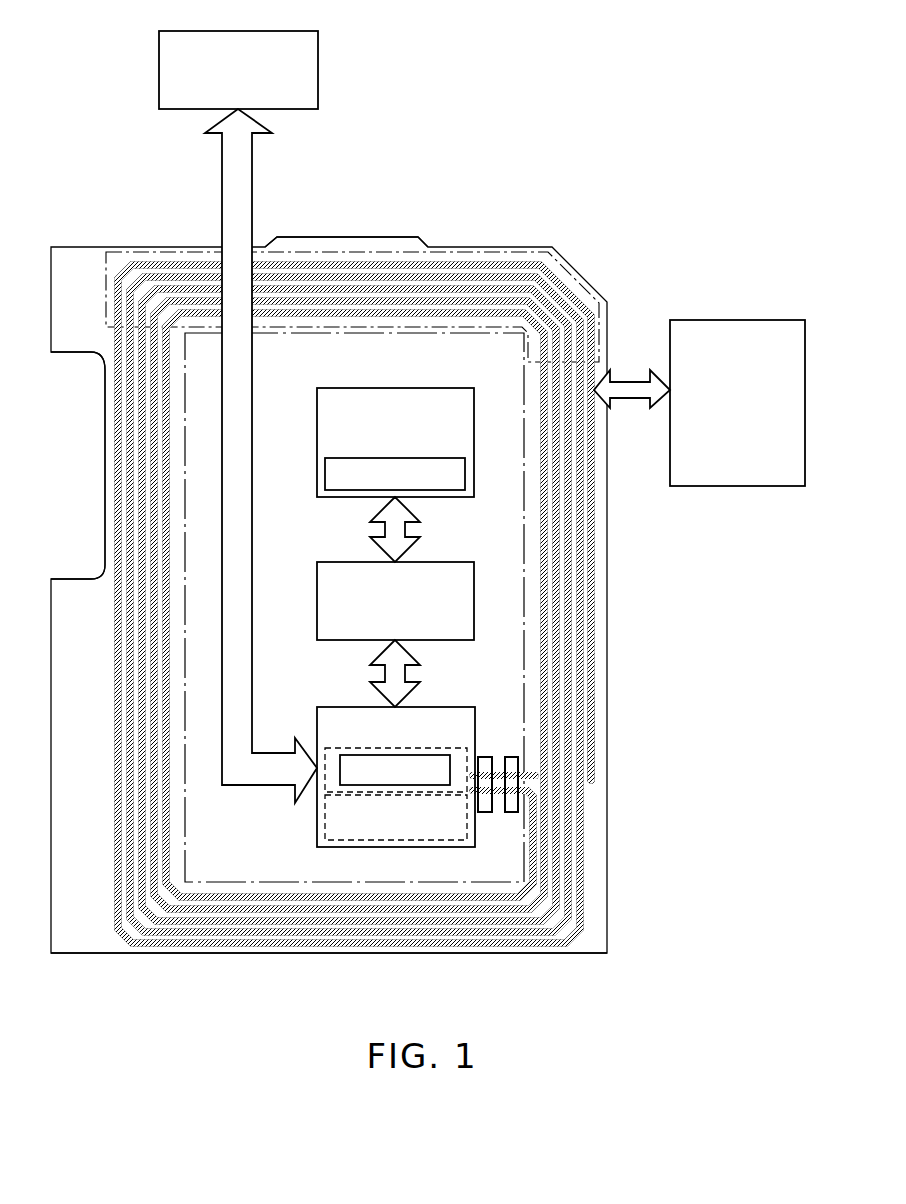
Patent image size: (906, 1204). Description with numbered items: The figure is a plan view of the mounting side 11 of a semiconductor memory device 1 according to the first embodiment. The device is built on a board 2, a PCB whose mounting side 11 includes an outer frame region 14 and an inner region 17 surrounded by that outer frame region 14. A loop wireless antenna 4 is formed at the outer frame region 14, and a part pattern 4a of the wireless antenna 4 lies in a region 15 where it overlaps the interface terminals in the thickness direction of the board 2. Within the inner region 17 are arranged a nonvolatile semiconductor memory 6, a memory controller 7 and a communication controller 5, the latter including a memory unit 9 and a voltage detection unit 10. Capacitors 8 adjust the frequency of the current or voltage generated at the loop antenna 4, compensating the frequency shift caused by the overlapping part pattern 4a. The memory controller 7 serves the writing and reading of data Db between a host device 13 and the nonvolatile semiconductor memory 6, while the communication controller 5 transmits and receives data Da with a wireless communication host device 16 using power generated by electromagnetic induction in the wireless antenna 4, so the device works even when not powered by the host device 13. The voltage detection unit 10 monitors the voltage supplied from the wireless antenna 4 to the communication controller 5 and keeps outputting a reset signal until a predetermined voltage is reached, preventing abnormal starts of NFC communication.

The semiconductor memory device 1 is at (556, 253).
The board 2 is at (78, 600).
The loop wireless antenna 4 is at (598, 670).
The part pattern 4a is at (322, 246).
The communication controller 5 is at (456, 707).
The nonvolatile semiconductor memory 6 is at (428, 388).
The memory controller 7 is at (446, 562).
The capacitors 8 is at (485, 757).
The memory unit 9 is at (337, 755).
The voltage detection unit 10 is at (325, 818).
The mounting side 11 is at (598, 800).
The host device 13 is at (319, 66).
The outer frame region 14 is at (80, 936).
The region 15 is at (117, 258).
The wireless communication host device 16 is at (735, 320).
The inner region 17 is at (467, 362).
The data Da is at (338, 760).
The data Db is at (337, 492).